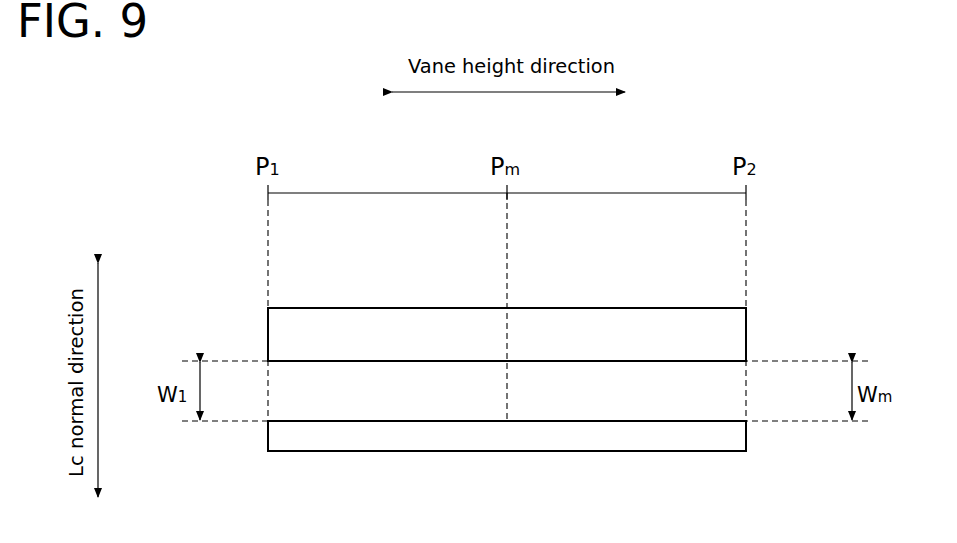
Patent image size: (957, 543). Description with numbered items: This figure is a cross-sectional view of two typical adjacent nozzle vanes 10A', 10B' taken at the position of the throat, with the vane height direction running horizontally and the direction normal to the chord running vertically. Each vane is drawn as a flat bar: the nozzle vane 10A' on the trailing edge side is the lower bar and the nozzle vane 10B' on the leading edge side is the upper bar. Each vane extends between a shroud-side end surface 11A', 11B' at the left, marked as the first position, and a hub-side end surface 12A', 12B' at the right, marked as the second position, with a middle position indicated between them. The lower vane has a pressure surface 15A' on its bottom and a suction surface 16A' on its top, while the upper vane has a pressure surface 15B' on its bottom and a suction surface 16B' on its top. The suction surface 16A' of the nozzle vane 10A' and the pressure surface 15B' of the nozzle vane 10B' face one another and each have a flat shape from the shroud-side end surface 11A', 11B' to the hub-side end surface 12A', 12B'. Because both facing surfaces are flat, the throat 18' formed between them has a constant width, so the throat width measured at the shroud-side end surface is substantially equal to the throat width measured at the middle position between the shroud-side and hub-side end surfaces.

The nozzle vane 10A' is at (507, 468).
The nozzle vane 10B' is at (507, 303).
The shroud-side end surface 11A' is at (230, 446).
The shroud-side end surface 11B' is at (230, 333).
The hub-side end surface 12A' is at (788, 442).
The hub-side end surface 12B' is at (788, 334).
The pressure surface 15A' is at (420, 484).
The pressure surface 15B' is at (390, 389).
The suction surface 16A' is at (470, 395).
The suction surface 16B' is at (420, 276).
The throat 18' is at (630, 391).